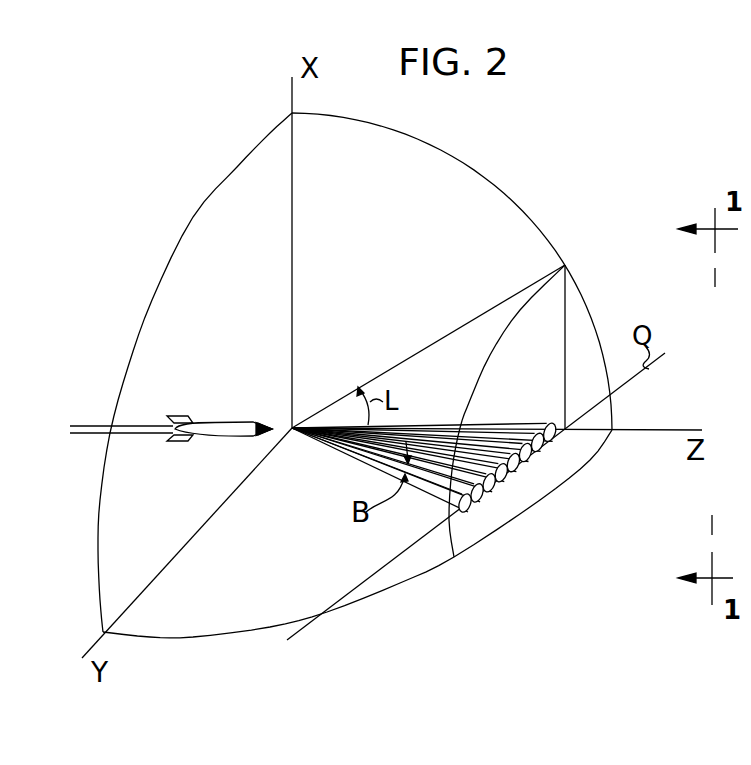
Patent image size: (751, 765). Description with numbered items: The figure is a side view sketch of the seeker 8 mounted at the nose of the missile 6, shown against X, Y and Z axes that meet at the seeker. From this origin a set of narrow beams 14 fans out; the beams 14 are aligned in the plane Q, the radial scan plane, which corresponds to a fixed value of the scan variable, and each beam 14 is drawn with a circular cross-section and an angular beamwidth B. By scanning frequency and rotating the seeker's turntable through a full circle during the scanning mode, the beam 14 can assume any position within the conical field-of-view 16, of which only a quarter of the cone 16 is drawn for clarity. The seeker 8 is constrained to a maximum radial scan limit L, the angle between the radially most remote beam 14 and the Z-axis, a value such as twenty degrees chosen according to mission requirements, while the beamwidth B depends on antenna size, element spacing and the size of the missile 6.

The missile 6 is at (222, 422).
The seeker 8 is at (267, 425).
The narrow beams 14 is at (466, 512).
The conical field-of-view 16 is at (552, 318).